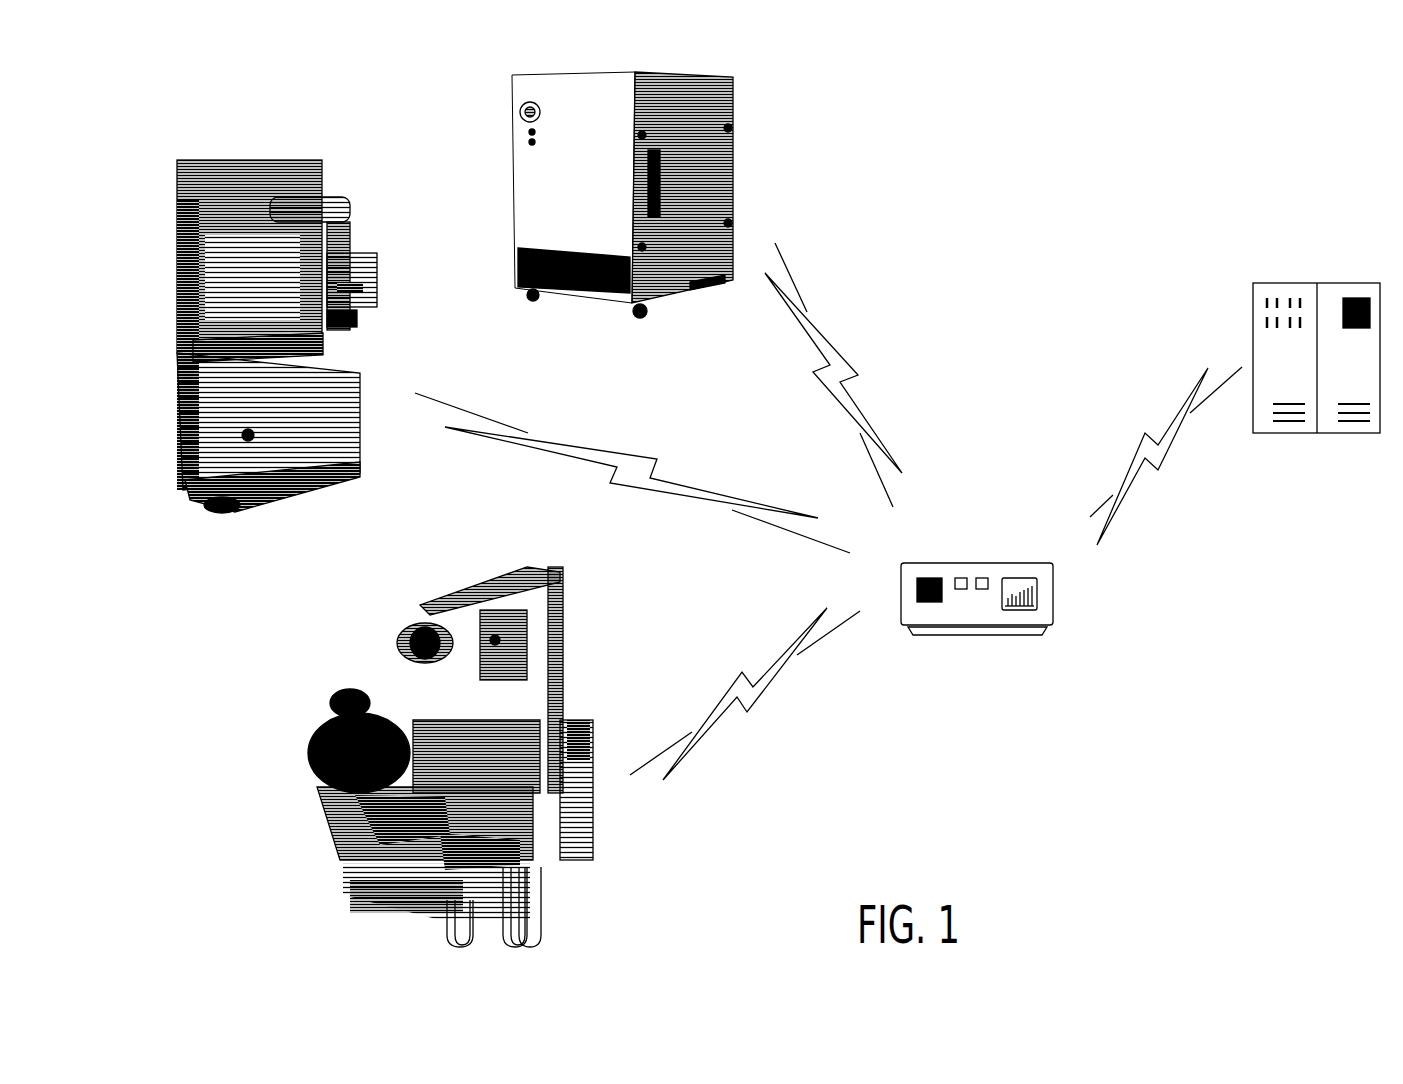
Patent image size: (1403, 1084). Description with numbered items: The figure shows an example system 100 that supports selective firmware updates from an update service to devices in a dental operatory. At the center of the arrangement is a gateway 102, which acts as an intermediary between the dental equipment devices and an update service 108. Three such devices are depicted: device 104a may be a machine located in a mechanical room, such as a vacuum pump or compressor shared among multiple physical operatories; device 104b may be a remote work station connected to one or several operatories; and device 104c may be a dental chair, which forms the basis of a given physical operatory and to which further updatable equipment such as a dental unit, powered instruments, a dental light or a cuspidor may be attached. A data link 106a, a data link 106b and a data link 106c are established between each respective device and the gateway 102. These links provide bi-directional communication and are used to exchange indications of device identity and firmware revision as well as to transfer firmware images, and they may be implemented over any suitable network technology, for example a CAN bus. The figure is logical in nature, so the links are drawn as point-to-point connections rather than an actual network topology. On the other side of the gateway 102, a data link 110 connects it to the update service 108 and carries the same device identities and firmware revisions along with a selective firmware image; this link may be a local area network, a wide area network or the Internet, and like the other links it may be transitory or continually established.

The system 100 is at (1125, 150).
The gateway 102 is at (977, 610).
The device 104a is at (545, 83).
The device 104b is at (208, 160).
The device 104c is at (316, 724).
The data link 106a is at (828, 375).
The data link 106b is at (632, 473).
The data link 106c is at (745, 694).
The update service 108 is at (1258, 293).
The data link 110 is at (1166, 456).